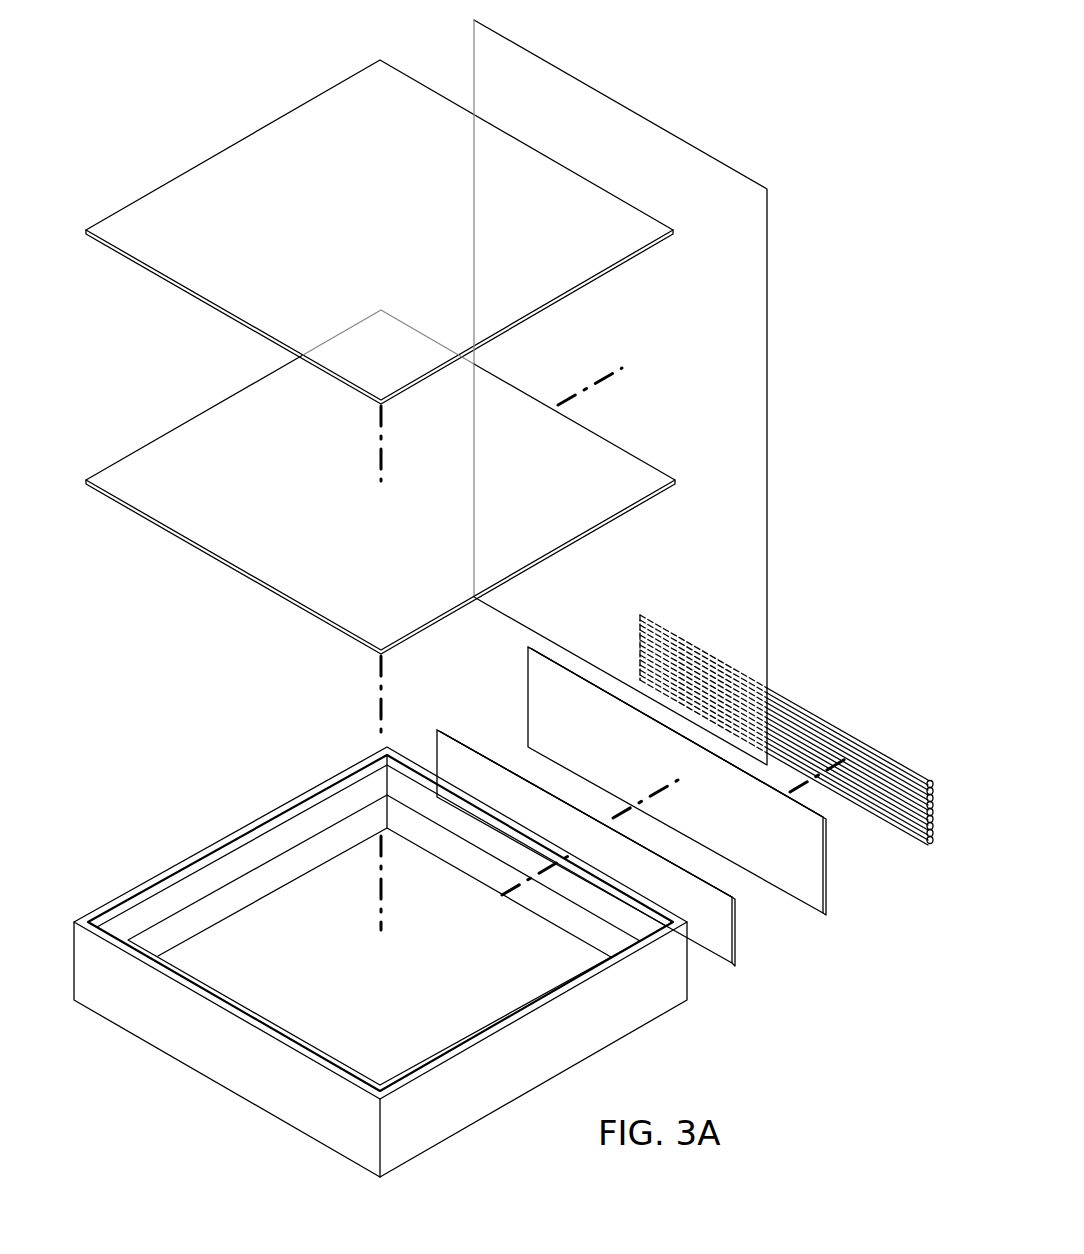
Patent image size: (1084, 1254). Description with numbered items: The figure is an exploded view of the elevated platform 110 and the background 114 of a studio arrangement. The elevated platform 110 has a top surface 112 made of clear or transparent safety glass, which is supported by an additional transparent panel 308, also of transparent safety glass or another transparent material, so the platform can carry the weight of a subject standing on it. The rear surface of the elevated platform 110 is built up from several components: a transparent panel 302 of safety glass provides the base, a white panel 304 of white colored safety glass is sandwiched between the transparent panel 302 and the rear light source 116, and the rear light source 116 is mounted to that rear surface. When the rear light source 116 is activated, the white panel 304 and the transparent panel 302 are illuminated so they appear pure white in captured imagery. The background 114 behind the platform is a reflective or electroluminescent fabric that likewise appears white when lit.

The elevated platform 110 is at (228, 836).
The top surface 112 is at (236, 150).
The background 114 is at (623, 104).
The rear light source 116 is at (850, 735).
The transparent panel 302 is at (737, 937).
The white panel 304 is at (825, 866).
The additional transparent panel 308 is at (172, 430).